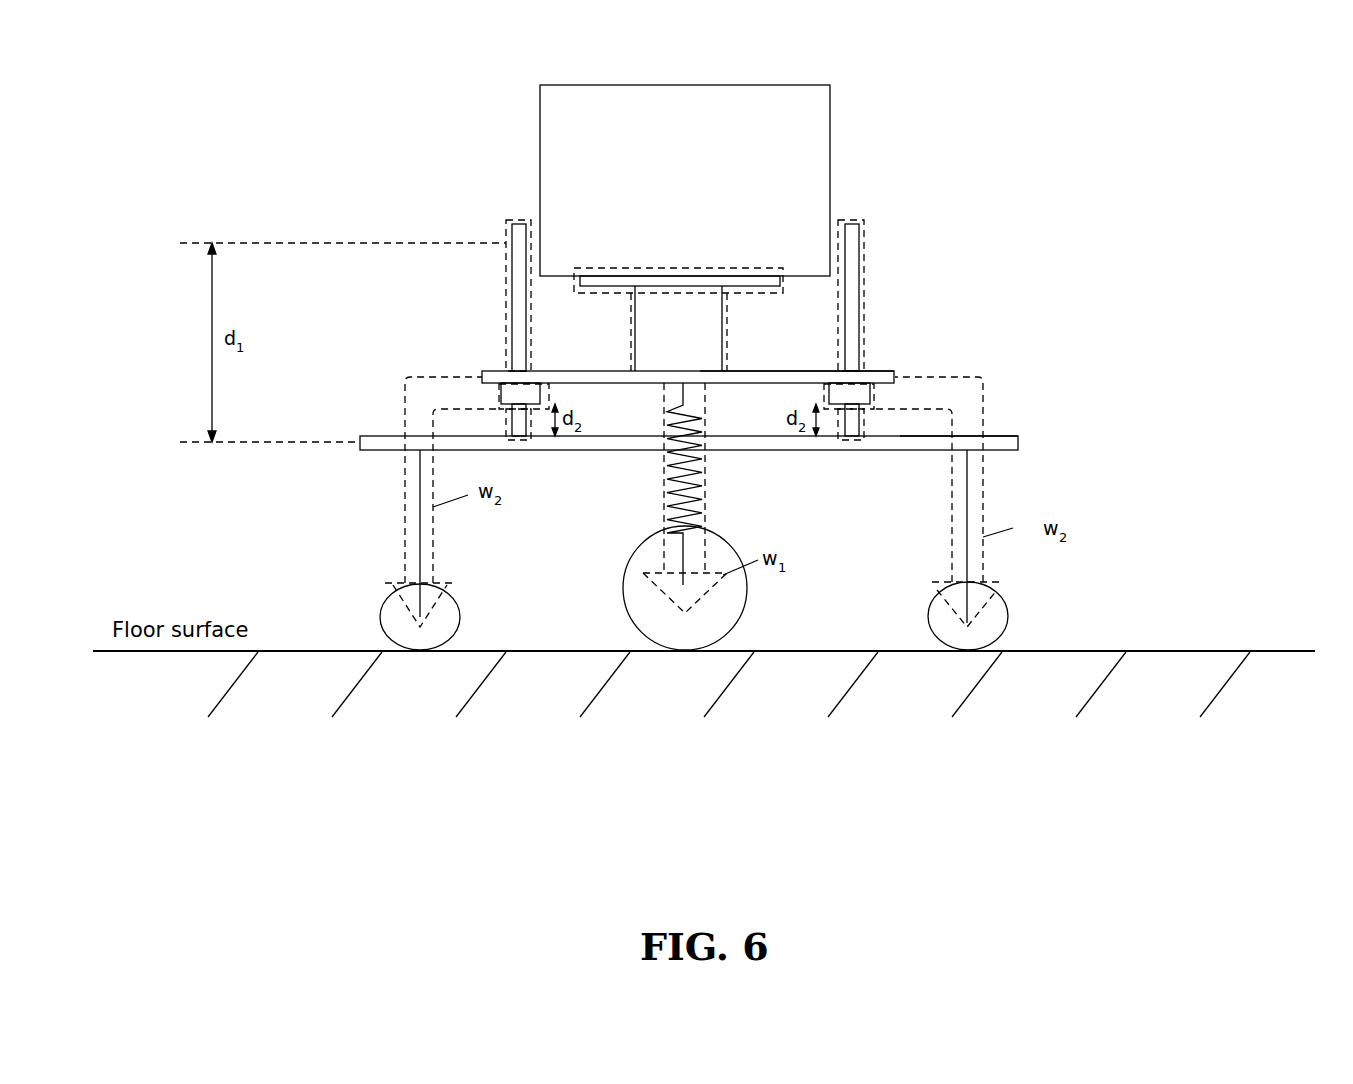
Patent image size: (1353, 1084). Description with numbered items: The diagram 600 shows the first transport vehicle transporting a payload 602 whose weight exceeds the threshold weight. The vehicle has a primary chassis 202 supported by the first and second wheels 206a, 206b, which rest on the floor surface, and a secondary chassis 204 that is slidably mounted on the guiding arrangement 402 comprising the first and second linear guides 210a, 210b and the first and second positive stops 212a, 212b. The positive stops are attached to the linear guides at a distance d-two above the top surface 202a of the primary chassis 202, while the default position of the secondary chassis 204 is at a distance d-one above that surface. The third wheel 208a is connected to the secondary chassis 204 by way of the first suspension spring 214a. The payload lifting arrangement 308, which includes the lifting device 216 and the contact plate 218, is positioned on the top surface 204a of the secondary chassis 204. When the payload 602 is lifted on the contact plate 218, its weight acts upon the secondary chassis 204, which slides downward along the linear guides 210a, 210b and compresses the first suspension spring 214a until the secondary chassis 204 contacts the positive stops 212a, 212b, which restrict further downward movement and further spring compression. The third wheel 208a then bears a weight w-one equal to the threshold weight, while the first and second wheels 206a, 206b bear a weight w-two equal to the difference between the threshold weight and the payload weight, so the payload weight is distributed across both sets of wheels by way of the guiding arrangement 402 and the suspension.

The diagram 600 is at (170, 74).
The payload 602 is at (677, 83).
The guiding arrangement 402 is at (510, 223).
The contact plate 218 is at (757, 275).
The lifting device 216 is at (613, 287).
The payload lifting arrangement 308 is at (728, 347).
The secondary chassis 204 is at (873, 373).
The top surface of the secondary chassis 204a is at (791, 363).
The first linear guide 210a is at (512, 352).
The second linear guide 210b is at (860, 278).
The first positive stop 212a is at (500, 393).
The second positive stop 212b is at (875, 407).
The primary chassis 202 is at (1018, 448).
The top surface of the primary chassis 202a is at (1007, 428).
The first suspension spring 214a is at (702, 507).
The third wheel 208a is at (632, 553).
The first wheel 206a is at (383, 597).
The second wheel 206b is at (928, 600).